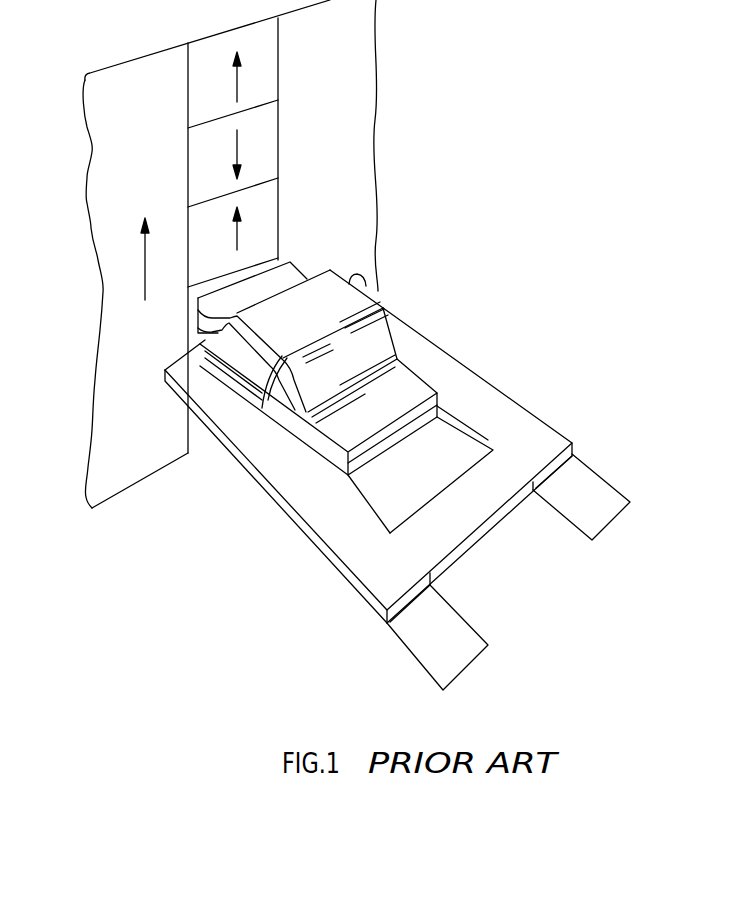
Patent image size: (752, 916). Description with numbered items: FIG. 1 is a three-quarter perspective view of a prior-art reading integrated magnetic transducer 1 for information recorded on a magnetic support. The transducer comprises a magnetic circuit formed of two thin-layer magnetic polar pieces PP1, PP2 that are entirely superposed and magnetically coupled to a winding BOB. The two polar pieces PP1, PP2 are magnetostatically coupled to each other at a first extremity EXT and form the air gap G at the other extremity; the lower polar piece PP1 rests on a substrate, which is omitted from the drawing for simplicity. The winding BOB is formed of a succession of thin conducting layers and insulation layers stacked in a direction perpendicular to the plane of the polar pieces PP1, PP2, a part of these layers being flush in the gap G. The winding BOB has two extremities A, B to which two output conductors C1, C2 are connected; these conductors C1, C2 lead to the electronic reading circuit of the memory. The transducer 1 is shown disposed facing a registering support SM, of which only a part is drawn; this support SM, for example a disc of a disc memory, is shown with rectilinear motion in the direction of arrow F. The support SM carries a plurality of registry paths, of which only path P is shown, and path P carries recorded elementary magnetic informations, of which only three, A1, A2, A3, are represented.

The registering support SM is at (367, 62).
The registry path P is at (188, 154).
The elementary magnetic information A1 is at (278, 60).
The elementary magnetic information A2 is at (278, 128).
The elementary magnetic information A3 is at (278, 204).
The arrow indicating direction of movement F is at (151, 257).
The magnetic head 1 is at (132, 288).
The first extremity EXT is at (397, 453).
The output conductor C1 is at (472, 663).
The output conductor C2 is at (608, 527).
The extremity of the winding A is at (562, 466).
The extremity of the winding B is at (416, 593).
The magnetic polar piece PP1 is at (440, 410).
The magnetic polar piece PP2 is at (366, 277).
The air gap G is at (198, 312).
The winding BOB is at (262, 398).